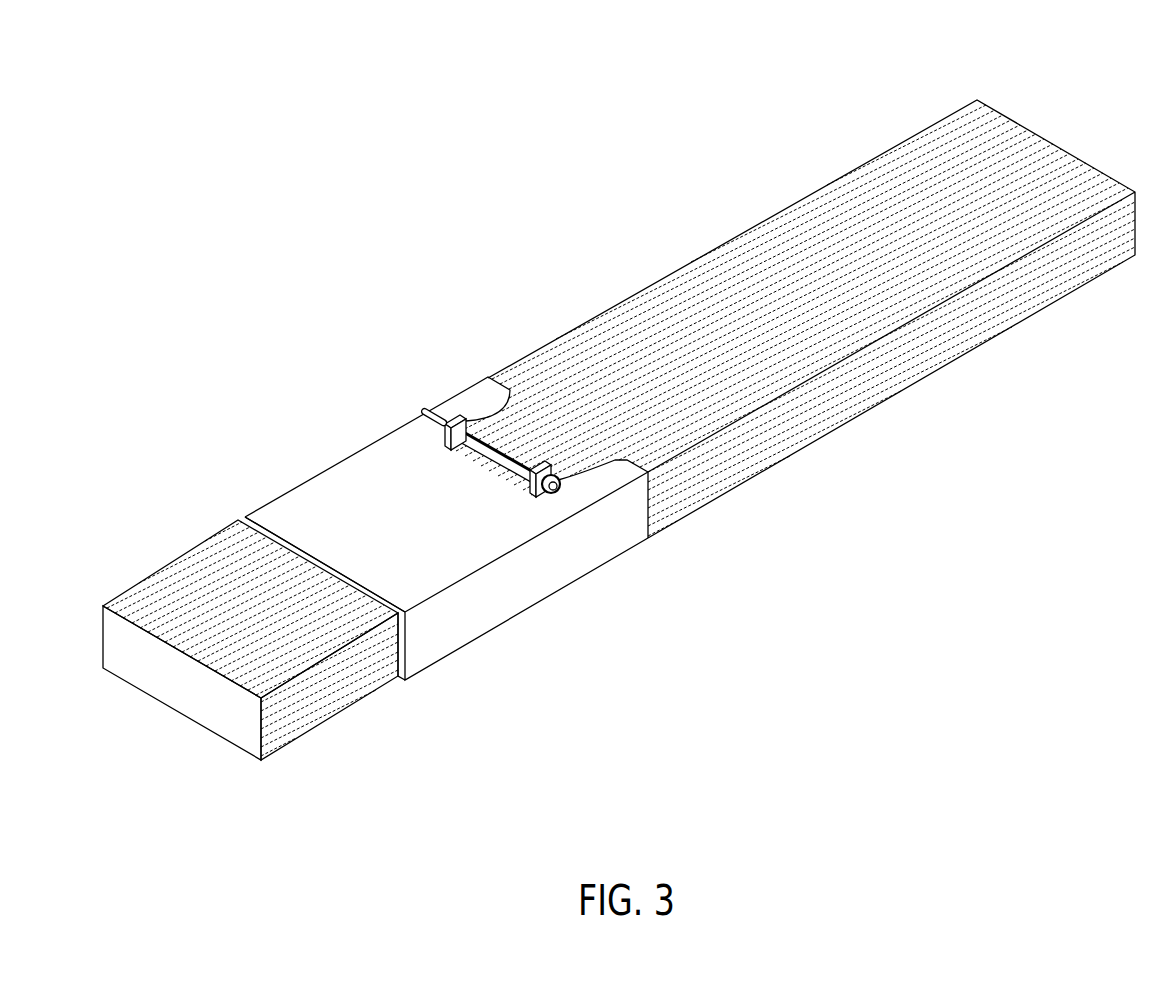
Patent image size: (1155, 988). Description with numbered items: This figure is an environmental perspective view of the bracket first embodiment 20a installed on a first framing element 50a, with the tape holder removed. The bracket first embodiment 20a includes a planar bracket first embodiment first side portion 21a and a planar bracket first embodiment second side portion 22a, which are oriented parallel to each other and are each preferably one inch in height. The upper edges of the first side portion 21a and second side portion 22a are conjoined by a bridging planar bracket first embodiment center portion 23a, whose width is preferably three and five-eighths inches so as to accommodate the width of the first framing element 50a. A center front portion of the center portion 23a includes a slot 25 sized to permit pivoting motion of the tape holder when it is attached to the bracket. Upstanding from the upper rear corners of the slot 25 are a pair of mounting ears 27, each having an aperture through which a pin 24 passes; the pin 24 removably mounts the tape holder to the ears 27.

The first framing element 50a is at (990, 192).
The bracket first embodiment 20a is at (380, 402).
The bracket first embodiment first side portion 21a is at (475, 630).
The bracket first embodiment second side portion 22a is at (238, 520).
The bracket first embodiment center portion 23a is at (343, 503).
The pin 24 is at (427, 409).
The slot 25 is at (539, 436).
The mounting ears 27 is at (462, 417).